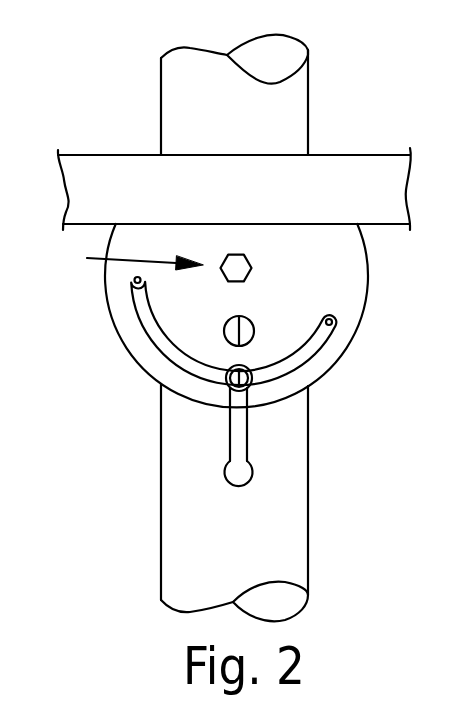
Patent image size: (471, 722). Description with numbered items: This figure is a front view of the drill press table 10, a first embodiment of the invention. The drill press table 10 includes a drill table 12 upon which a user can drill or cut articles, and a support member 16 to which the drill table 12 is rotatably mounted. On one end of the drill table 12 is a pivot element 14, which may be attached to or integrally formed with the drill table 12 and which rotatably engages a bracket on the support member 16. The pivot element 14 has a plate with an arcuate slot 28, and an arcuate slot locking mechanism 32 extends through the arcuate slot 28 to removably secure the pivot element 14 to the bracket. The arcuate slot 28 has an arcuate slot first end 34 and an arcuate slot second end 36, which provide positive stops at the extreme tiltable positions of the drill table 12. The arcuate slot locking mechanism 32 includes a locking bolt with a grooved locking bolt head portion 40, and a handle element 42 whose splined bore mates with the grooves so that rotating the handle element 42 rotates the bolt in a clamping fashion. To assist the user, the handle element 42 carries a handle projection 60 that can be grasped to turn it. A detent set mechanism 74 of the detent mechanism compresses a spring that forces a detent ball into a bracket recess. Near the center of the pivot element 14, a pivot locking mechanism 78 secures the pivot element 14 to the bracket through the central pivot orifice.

The drill press table 10 is at (353, 99).
The drill table 12 is at (117, 155).
The pivot element 14 is at (113, 403).
The support member 16 is at (161, 100).
The arcuate slot 28 is at (318, 343).
The arcuate slot locking mechanism 32 is at (285, 409).
The arcuate slot first end 34 is at (134, 286).
The arcuate slot second end 36 is at (332, 326).
The locking bolt head portion 40 is at (252, 268).
The handle element 42 is at (230, 438).
The handle projection 60 is at (228, 479).
The detent set mechanism 74 is at (254, 334).
The pivot locking mechanism 78 is at (124, 261).